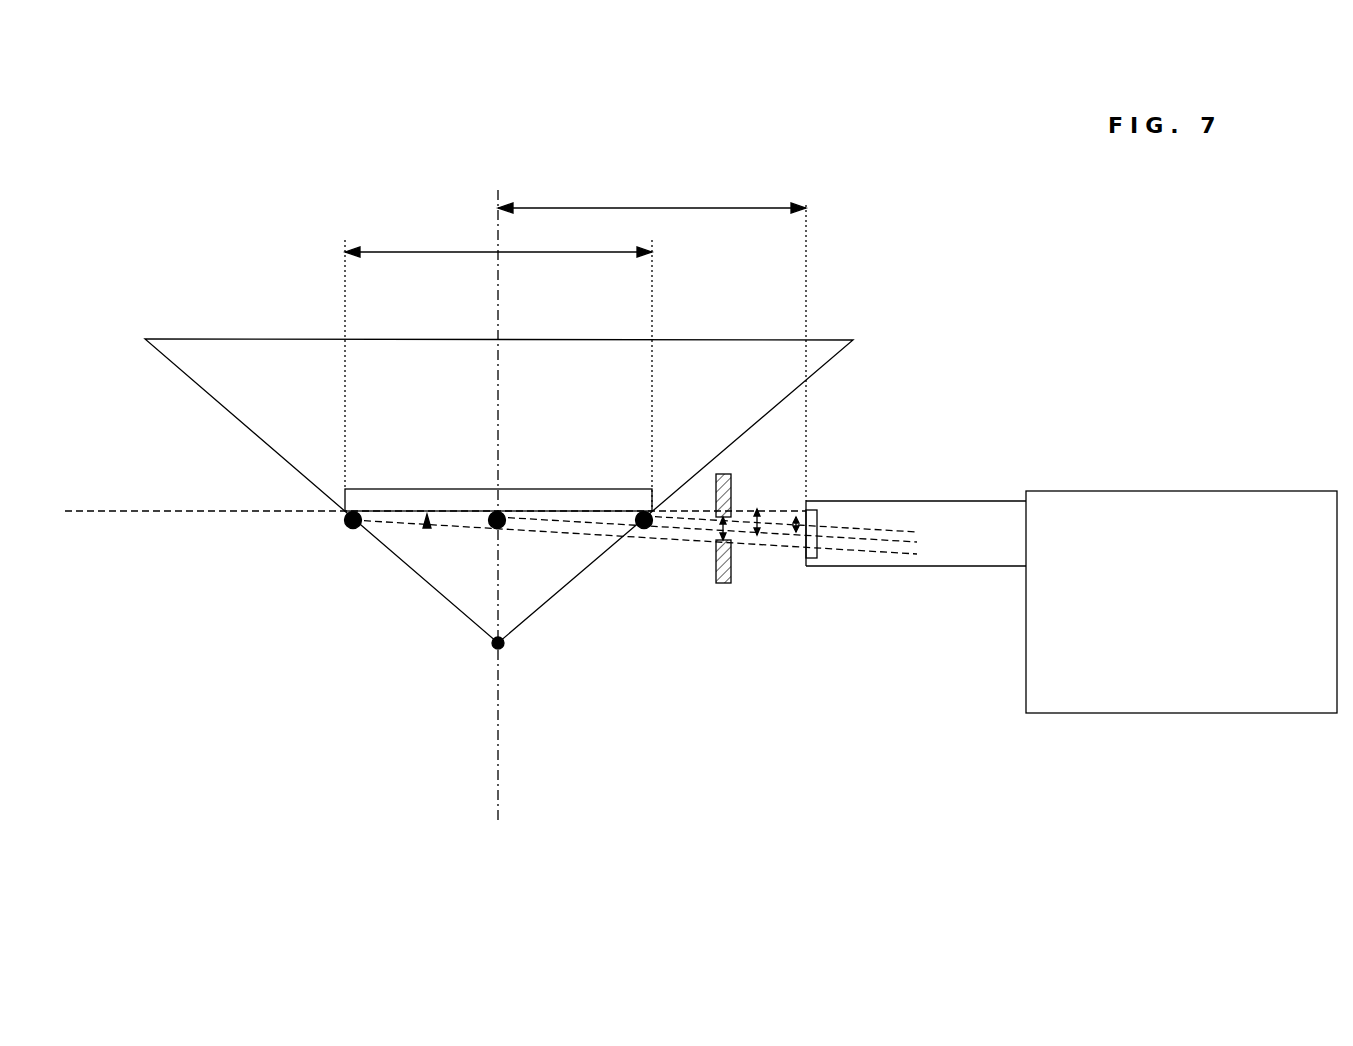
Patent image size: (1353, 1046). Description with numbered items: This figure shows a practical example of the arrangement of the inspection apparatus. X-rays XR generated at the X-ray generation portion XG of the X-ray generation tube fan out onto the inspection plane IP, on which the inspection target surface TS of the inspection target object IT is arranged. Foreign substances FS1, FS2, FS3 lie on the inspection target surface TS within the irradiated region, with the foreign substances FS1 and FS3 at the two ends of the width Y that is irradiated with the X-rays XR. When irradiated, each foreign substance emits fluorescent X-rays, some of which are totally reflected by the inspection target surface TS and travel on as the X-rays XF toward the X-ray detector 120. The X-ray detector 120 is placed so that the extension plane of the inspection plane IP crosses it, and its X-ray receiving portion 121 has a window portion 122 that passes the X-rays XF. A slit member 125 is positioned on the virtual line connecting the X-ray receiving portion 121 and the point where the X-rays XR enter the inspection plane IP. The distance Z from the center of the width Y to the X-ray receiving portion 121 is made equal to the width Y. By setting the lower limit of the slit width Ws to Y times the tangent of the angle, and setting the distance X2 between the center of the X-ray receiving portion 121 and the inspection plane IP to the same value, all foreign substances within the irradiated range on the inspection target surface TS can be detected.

The X-rays XR is at (288, 365).
The inspection plane IP is at (145, 511).
The inspection target object IT is at (403, 488).
The foreign substance FS1 is at (640, 513).
The foreign substance FS2 is at (493, 513).
The foreign substance FS3 is at (345, 522).
The inspection target surface TS is at (427, 528).
The X-rays XF is at (568, 525).
The X-ray generation portion XG is at (492, 648).
The width of the slit Ws is at (722, 528).
The slit member 125 is at (727, 585).
The window portion 122 is at (812, 512).
The X-ray receiving portion 121 is at (938, 505).
The X-ray detector 120 is at (1261, 715).
The distance X2 is at (787, 506).
The width Y is at (498, 240).
The distance Z is at (652, 197).